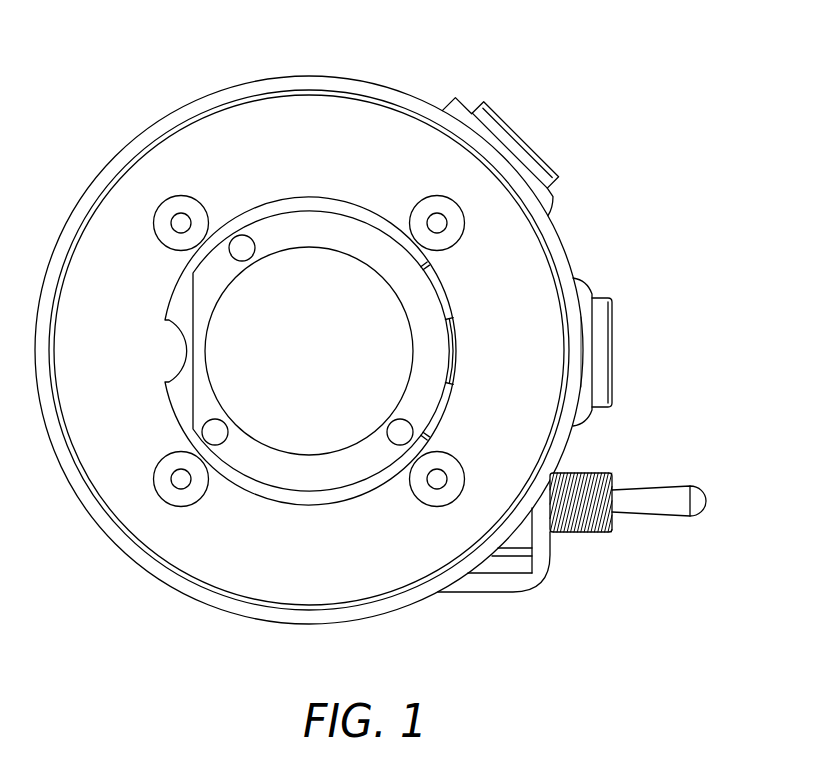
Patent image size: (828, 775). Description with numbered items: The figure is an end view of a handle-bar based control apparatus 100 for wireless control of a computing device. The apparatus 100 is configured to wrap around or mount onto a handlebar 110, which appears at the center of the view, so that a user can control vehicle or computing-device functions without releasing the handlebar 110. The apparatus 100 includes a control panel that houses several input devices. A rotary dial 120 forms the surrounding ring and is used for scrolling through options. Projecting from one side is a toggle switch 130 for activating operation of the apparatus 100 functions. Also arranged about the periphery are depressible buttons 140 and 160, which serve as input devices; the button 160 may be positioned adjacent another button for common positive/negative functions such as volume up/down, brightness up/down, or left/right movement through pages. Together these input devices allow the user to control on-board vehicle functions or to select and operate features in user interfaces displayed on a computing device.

The handle-bar based control apparatus 100 is at (370, 376).
The handlebar 110 is at (335, 364).
The rotary dial 120 is at (218, 608).
The toggle switch 130 is at (602, 473).
The depressible button 140 is at (612, 350).
The depressible button 160 is at (523, 143).